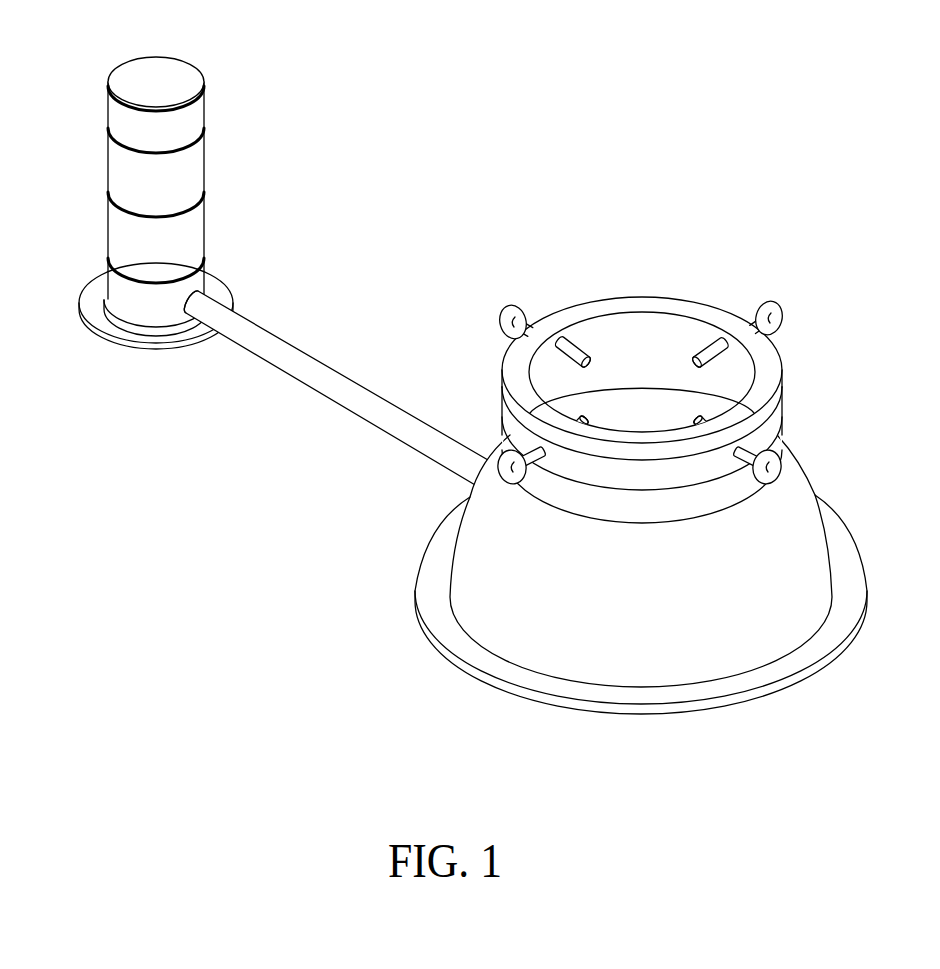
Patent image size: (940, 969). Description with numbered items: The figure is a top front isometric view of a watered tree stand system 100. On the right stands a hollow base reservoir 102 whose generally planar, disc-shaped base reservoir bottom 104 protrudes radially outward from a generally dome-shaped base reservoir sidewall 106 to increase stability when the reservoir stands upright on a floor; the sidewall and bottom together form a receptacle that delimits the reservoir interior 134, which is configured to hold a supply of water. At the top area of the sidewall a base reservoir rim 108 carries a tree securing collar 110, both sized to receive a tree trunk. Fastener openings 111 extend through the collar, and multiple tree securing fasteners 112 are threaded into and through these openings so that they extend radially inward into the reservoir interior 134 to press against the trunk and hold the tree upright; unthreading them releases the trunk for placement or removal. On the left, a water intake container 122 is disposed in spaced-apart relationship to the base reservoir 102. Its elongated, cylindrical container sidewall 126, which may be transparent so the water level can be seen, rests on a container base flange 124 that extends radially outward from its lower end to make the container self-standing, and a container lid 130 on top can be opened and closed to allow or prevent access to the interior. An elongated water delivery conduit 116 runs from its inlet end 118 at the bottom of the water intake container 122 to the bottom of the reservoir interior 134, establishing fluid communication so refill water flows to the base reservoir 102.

The watered tree stand system 100 is at (502, 378).
The base reservoir 102 is at (669, 479).
The base reservoir bottom 104 is at (838, 612).
The base reservoir sidewall 106 is at (802, 548).
The base reservoir rim 108 is at (677, 502).
The tree securing collar 110 is at (769, 374).
The fastener openings 111 is at (732, 345).
The tree securing fasteners 112 is at (512, 305).
The water delivery conduit 116 is at (295, 393).
The inlet end 118 is at (172, 298).
The water intake container 122 is at (190, 196).
The container base flange 124 is at (218, 290).
The container sidewall 126 is at (186, 232).
The container lid 130 is at (178, 76).
The reservoir interior 134 is at (612, 410).